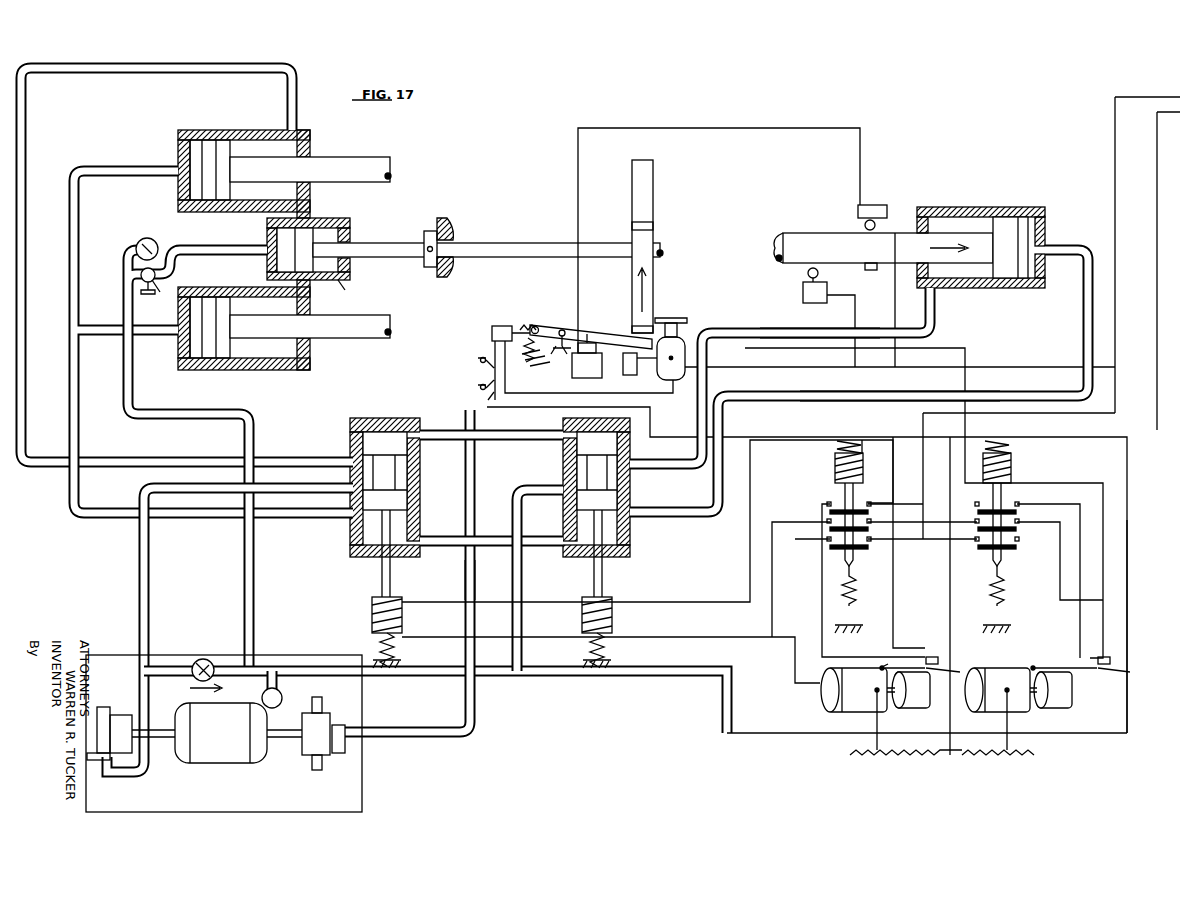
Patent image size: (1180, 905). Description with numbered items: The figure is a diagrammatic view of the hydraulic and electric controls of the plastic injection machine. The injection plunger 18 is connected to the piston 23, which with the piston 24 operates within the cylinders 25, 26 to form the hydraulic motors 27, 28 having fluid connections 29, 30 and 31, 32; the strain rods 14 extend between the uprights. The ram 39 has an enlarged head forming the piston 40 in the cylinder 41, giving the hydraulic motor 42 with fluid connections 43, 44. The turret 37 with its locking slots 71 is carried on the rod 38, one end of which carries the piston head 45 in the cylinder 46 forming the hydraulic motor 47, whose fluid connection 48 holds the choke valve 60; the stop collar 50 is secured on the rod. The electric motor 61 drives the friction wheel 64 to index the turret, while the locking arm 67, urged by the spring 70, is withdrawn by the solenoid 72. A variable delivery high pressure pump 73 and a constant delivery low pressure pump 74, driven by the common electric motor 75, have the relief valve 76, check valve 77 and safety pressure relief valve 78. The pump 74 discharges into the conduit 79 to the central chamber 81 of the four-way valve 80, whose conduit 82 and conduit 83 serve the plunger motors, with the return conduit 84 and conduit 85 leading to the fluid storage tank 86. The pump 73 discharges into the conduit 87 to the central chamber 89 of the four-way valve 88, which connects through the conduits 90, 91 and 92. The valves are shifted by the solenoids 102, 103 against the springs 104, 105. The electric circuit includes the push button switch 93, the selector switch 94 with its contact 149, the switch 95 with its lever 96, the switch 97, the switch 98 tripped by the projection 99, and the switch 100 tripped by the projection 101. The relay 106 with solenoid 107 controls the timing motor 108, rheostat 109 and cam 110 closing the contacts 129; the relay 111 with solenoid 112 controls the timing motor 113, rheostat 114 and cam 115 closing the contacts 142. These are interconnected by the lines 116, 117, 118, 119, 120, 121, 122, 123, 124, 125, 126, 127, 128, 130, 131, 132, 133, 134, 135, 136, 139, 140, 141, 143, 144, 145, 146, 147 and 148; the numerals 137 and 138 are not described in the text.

The strain rods 14 is at (384, 166).
The injection plunger 18 is at (384, 316).
The piston 23 is at (218, 340).
The piston 24 is at (214, 140).
The cylinder 25 is at (236, 287).
The cylinder 26 is at (216, 212).
The hydraulic motor 27 is at (180, 365).
The hydraulic motor 28 is at (178, 134).
The fluid connection 29 is at (180, 338).
The fluid connection 30 is at (300, 366).
The fluid connection 31 is at (178, 178).
The fluid connection 32 is at (300, 132).
The turret 37 is at (648, 178).
The rod 38 is at (518, 243).
The ram 39 is at (793, 233).
The piston 40 is at (1032, 207).
The cylinder 41 is at (958, 207).
The hydraulic motor 42 is at (1006, 217).
The fluid connection 43 is at (934, 288).
The fluid connection 44 is at (1050, 248).
The piston head 45 is at (278, 252).
The cylinder 46 is at (350, 289).
The hydraulic motor 47 is at (326, 218).
The fluid connection 48 is at (267, 254).
The stop collar 50 is at (428, 232).
The choke valve 60 is at (152, 282).
The electric motor 61 is at (676, 380).
The friction wheel 64 is at (678, 320).
The locking arm 67 is at (600, 334).
The spring 70 is at (520, 358).
The locking slot 71 is at (652, 226).
The electric solenoid 72 is at (572, 372).
The variable delivery high pressure pump 73 is at (322, 758).
The constant delivery low pressure pump 74 is at (116, 714).
The electric motor 75 is at (230, 756).
The relief valve 76 is at (100, 762).
The check valve 77 is at (190, 682).
The safety pressure relief valve 78 is at (283, 698).
The conduit 79 is at (311, 488).
The four-way valve 80 is at (414, 494).
The central chamber 81 is at (400, 470).
The conduit 82 is at (318, 460).
The conduit 83 is at (78, 392).
The return conduit 84 is at (448, 541).
The conduit 85 is at (465, 572).
The fluid storage tank 86 is at (320, 666).
The conduit 87 is at (406, 676).
The four-way valve 88 is at (566, 462).
The central chamber 89 is at (616, 472).
The conduit 90 is at (702, 436).
The conduit 91 is at (890, 402).
The conduit 92 is at (512, 436).
The push button switch 93 is at (478, 372).
The selector switch 94 is at (486, 407).
The electric switch 95 is at (492, 330).
The lever 96 is at (530, 328).
The switch 97 is at (623, 370).
The switch 98 is at (858, 209).
The projection 99 is at (896, 228).
The electric switch 100 is at (806, 303).
The projection 101 is at (865, 266).
The solenoid 102 is at (402, 617).
The solenoid 103 is at (612, 617).
The spring 104 is at (400, 645).
The spring 105 is at (610, 647).
The electric relay 106 is at (856, 556).
The solenoid 107 is at (835, 466).
The timing motor 108 is at (830, 706).
The rheostat 109 is at (904, 760).
The cam 110 is at (906, 708).
The electric relay 111 is at (990, 556).
The solenoid 112 is at (1011, 466).
The timing motor 113 is at (1008, 712).
The rheostat 114 is at (1000, 760).
The cam 115 is at (1060, 706).
The electric line 116 is at (1036, 367).
The electric line 117 is at (892, 318).
The electric line 118 is at (676, 122).
The return line 119 is at (750, 364).
The electric line 120 is at (578, 393).
The electric line 121 is at (556, 407).
The electric line 122 is at (876, 483).
The return line 123 is at (924, 419).
The electric line 124 is at (1032, 414).
The electric line 125 is at (900, 541).
The electric line 126 is at (795, 650).
The electric line 127 is at (877, 722).
The electric line 128 is at (950, 590).
The contacts 129 is at (936, 655).
The electric line 130 is at (896, 552).
The electric line 131 is at (822, 628).
The electric line 132 is at (895, 496).
The electric line 133 is at (908, 480).
The electric line 134 is at (922, 513).
The electric line 135 is at (740, 637).
The electric line 136 is at (750, 563).
The conduit 137 is at (182, 414).
The pressure gauge 138 is at (144, 240).
The electric line 139 is at (855, 318).
The electric line 140 is at (814, 348).
The electric line 141 is at (1012, 620).
The contacts 142 is at (1104, 668).
The electric line 143 is at (987, 518).
The electric line 144 is at (1080, 584).
The electric line 145 is at (1066, 600).
The electric line 146 is at (951, 521).
The electric line 147 is at (1128, 550).
The electric line 148 is at (494, 600).
The contact 149 is at (486, 398).